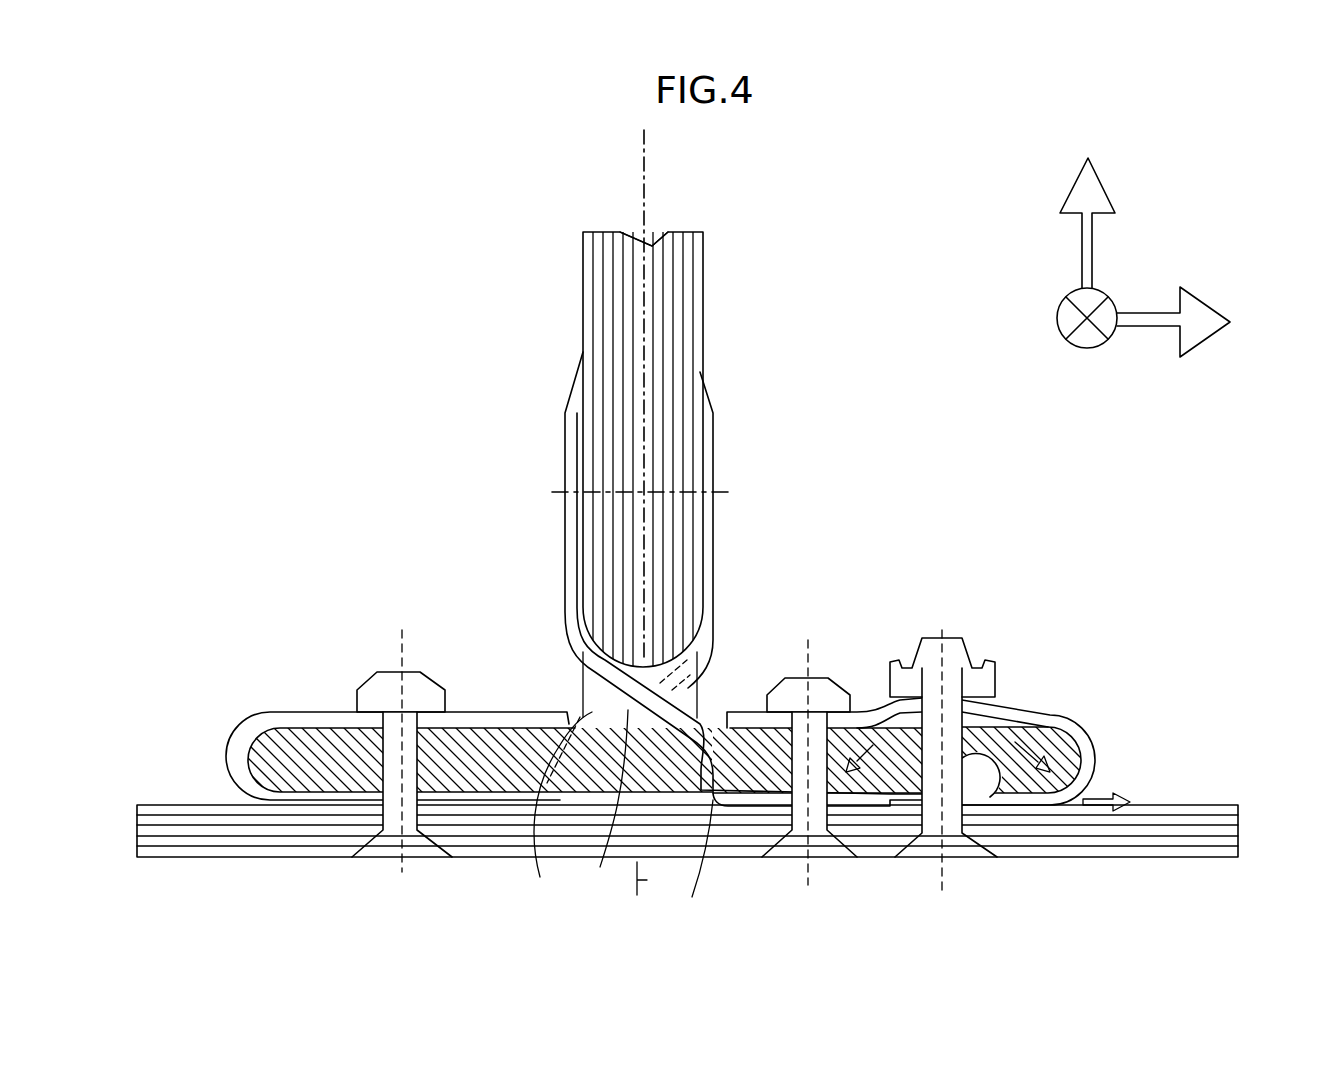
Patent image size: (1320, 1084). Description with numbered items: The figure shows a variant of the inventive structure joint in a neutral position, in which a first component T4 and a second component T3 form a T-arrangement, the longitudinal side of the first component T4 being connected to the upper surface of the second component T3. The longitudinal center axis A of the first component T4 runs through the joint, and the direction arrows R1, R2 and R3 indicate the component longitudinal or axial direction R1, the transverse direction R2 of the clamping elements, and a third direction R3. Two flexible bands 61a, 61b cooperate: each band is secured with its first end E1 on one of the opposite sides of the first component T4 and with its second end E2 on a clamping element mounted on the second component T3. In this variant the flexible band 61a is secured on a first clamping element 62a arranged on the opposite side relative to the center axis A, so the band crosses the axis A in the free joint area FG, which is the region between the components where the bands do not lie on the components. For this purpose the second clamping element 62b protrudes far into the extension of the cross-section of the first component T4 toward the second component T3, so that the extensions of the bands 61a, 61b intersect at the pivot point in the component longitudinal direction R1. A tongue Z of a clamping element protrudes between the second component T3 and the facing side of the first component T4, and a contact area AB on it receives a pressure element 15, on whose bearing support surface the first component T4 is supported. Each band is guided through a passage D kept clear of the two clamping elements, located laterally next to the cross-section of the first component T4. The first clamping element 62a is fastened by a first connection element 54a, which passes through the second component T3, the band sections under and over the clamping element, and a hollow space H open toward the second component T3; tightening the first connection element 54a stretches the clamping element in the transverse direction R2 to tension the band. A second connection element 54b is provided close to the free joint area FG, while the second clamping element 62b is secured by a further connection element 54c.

The second component T3 is at (1175, 830).
The first component T4 is at (638, 270).
The longitudinal center axis A is at (656, 515).
The first end of band E1 is at (568, 370).
The second end of band E2 is at (752, 708).
The flexible band 61a is at (565, 452).
The further flexible band 61b is at (715, 487).
The first clamping element 62a is at (1008, 738).
The second clamping element 62b is at (312, 740).
The free joint area FG is at (558, 632).
The tongue Z is at (595, 713).
The pressure element 15 is at (700, 668).
The passage D is at (622, 823).
The contact area AB is at (602, 805).
The hollow space H is at (982, 775).
The first connection element 54a is at (940, 857).
The second connection element 54b is at (807, 857).
The further connection element 54c is at (423, 857).
The axial direction R1 is at (1067, 323).
The transverse direction R2 is at (1201, 322).
The direction R3 is at (1066, 223).